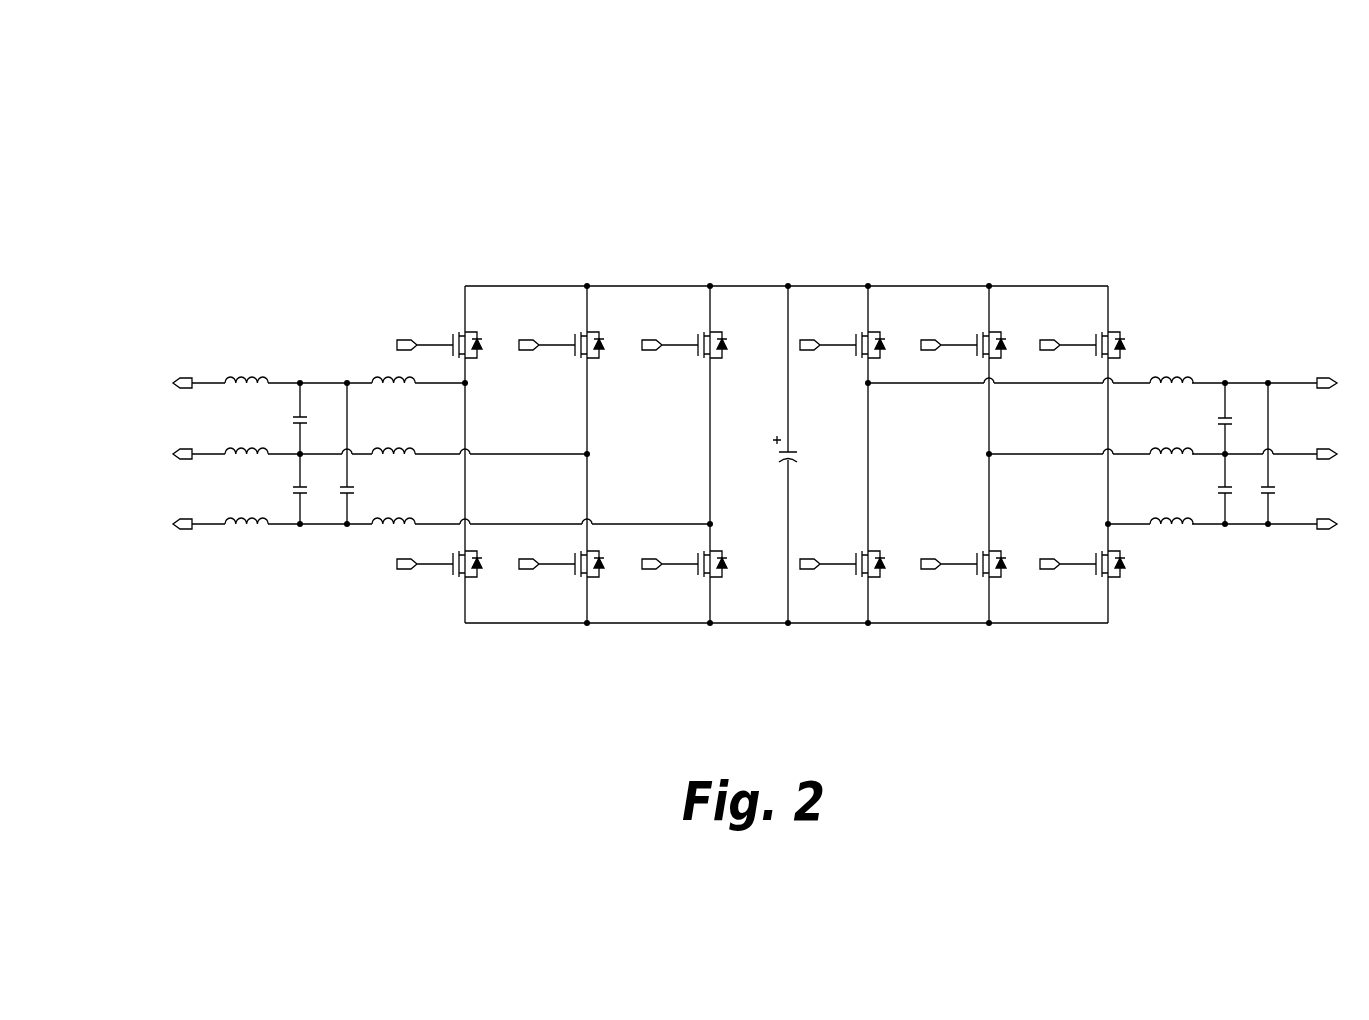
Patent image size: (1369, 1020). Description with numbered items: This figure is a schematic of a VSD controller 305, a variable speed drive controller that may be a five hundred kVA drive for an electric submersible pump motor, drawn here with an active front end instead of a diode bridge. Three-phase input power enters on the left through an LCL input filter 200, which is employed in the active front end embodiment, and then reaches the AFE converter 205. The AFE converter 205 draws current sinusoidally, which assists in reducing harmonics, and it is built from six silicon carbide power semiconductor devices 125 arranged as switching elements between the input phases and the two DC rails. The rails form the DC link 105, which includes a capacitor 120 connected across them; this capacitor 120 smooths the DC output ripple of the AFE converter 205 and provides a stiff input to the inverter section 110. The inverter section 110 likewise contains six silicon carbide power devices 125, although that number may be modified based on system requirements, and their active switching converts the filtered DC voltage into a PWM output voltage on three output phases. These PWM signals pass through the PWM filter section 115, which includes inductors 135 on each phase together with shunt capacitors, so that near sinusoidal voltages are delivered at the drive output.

The VSD controller 305 is at (1030, 177).
The LCL input filter 200 is at (275, 582).
The active front end converter 205 is at (569, 660).
The DC link 105 is at (793, 660).
The capacitor 120 is at (798, 452).
The inverter section 110 is at (1000, 660).
The silicon carbide power semiconductor devices 125 is at (459, 330).
The PWM filter section 115 is at (1280, 582).
The inductors 135 is at (1178, 376).